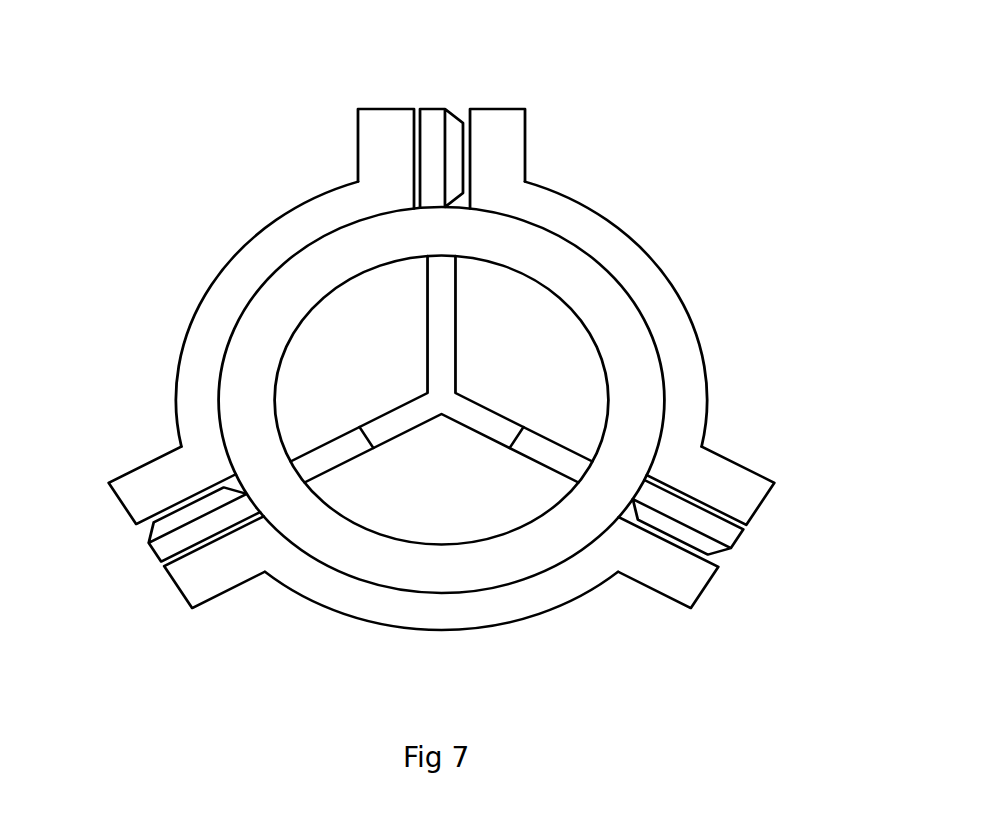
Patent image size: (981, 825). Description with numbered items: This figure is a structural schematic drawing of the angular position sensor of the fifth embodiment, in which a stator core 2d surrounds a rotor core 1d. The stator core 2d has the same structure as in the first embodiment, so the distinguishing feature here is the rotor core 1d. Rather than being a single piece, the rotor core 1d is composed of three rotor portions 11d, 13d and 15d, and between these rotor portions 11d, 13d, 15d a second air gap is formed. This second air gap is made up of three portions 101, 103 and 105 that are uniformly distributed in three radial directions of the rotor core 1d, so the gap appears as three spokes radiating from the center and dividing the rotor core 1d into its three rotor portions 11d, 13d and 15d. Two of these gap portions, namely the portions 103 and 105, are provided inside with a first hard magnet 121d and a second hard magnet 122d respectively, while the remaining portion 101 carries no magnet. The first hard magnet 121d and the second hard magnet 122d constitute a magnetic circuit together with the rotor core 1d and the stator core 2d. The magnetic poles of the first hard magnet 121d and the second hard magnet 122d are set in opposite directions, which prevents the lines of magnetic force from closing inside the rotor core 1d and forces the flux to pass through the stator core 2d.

The rotor core 1d is at (480, 351).
The stator core 2d is at (428, 340).
The rotor portion 11d is at (518, 383).
The rotor portion 15d is at (355, 355).
The portion of the second air gap 101 is at (463, 281).
The portion of the second air gap 103 is at (632, 359).
The portion of the second air gap 105 is at (250, 355).
The rotor portion 13d is at (449, 558).
The first hard magnet 121d is at (290, 525).
The second hard magnet 122d is at (627, 521).